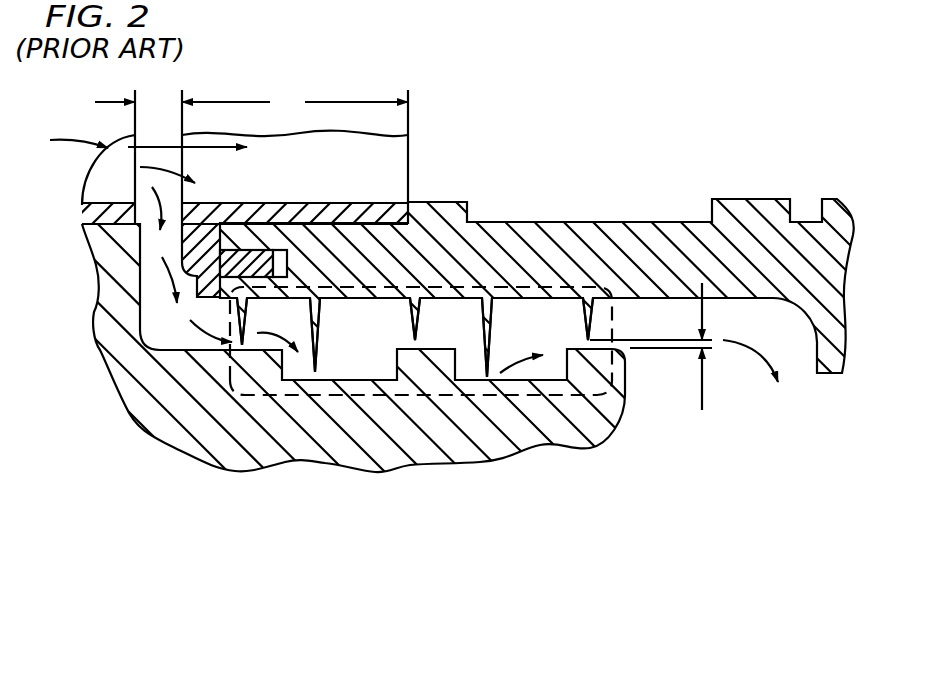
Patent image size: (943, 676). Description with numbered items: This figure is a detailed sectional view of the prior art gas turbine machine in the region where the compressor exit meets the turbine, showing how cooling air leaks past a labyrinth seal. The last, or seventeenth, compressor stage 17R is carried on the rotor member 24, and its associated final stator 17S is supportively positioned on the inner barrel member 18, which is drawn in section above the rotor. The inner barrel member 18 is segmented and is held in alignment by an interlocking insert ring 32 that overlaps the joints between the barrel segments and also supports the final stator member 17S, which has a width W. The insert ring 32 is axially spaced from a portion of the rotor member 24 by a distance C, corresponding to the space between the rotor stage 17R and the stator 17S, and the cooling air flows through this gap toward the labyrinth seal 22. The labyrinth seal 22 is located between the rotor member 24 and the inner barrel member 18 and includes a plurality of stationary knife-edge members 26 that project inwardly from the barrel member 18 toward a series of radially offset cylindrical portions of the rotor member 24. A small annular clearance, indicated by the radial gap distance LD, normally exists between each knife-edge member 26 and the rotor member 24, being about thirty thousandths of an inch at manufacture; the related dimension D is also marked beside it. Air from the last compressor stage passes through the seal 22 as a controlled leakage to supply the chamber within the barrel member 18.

The seventeenth stage 17R is at (107, 172).
The stator 17S is at (313, 186).
The inner barrel member 18 is at (545, 271).
The labyrinth seal 22 is at (612, 313).
The rotor member 24 is at (438, 440).
The knife-edge members 26 is at (410, 316).
The interlocking insert ring 32 is at (198, 222).
The distance C is at (132, 107).
The width W is at (295, 107).
The radial gap distance LD is at (702, 296).
The dimension D is at (707, 393).